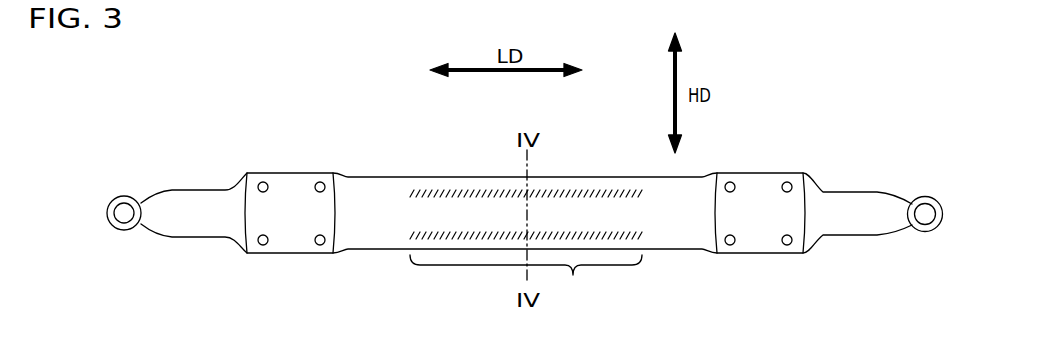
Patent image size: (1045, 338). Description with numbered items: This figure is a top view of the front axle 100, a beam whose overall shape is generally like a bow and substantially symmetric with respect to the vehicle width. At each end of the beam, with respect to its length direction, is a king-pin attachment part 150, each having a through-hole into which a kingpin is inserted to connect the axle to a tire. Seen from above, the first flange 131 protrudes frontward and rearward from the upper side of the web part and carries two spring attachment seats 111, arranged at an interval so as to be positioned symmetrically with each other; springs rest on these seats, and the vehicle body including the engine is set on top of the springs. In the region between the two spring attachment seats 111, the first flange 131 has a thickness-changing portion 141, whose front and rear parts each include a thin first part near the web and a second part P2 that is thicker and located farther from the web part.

The front axle 100 is at (200, 93).
The spring attachment seat 111 is at (296, 180).
The first flange 131 is at (365, 242).
The thickness-changing portion 141 is at (526, 209).
The king-pin attachment part 150 is at (127, 228).
The second part P2 is at (602, 232).